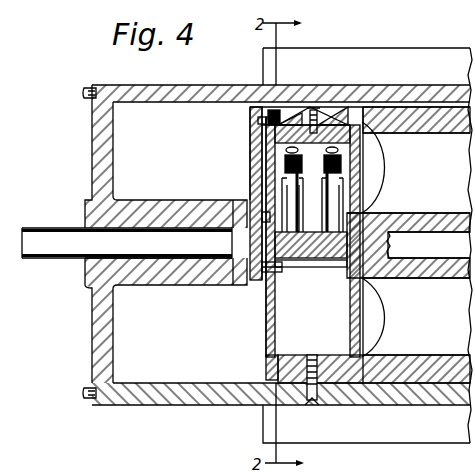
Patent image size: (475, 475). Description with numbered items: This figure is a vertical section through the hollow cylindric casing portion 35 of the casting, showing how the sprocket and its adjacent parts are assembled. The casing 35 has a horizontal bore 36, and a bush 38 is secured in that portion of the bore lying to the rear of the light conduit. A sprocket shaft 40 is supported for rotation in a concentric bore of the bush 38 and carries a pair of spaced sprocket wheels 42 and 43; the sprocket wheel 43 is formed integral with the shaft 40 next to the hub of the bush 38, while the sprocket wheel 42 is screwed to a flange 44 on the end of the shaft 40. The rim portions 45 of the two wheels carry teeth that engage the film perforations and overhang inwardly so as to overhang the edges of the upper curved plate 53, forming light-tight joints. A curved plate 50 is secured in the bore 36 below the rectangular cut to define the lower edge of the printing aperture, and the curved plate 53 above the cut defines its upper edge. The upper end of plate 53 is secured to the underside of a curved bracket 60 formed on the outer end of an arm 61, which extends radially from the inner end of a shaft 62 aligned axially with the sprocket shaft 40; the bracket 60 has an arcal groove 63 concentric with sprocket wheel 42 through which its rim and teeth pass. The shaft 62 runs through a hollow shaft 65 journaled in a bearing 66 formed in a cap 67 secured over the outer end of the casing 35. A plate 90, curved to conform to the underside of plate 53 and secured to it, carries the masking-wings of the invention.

The cylindric casing portion 35 is at (187, 96).
The horizontal bore 36 is at (202, 103).
The bush 38 is at (455, 128).
The sprocket shaft 40 is at (429, 243).
The sprocket wheel 42 is at (272, 171).
The sprocket wheel 43 is at (361, 167).
The flange 44 is at (265, 276).
The rim portions 45 is at (258, 121).
The curved plate 50 is at (325, 376).
The curved plate 53 is at (320, 116).
The curved bracket 60 is at (296, 113).
The arm 61 is at (266, 137).
The shaft 62 is at (188, 238).
The arcal groove 63 is at (276, 119).
The hollow shaft 65 is at (137, 258).
The bearing 66 is at (202, 272).
The cap 67 is at (100, 152).
The plate 90 is at (274, 142).